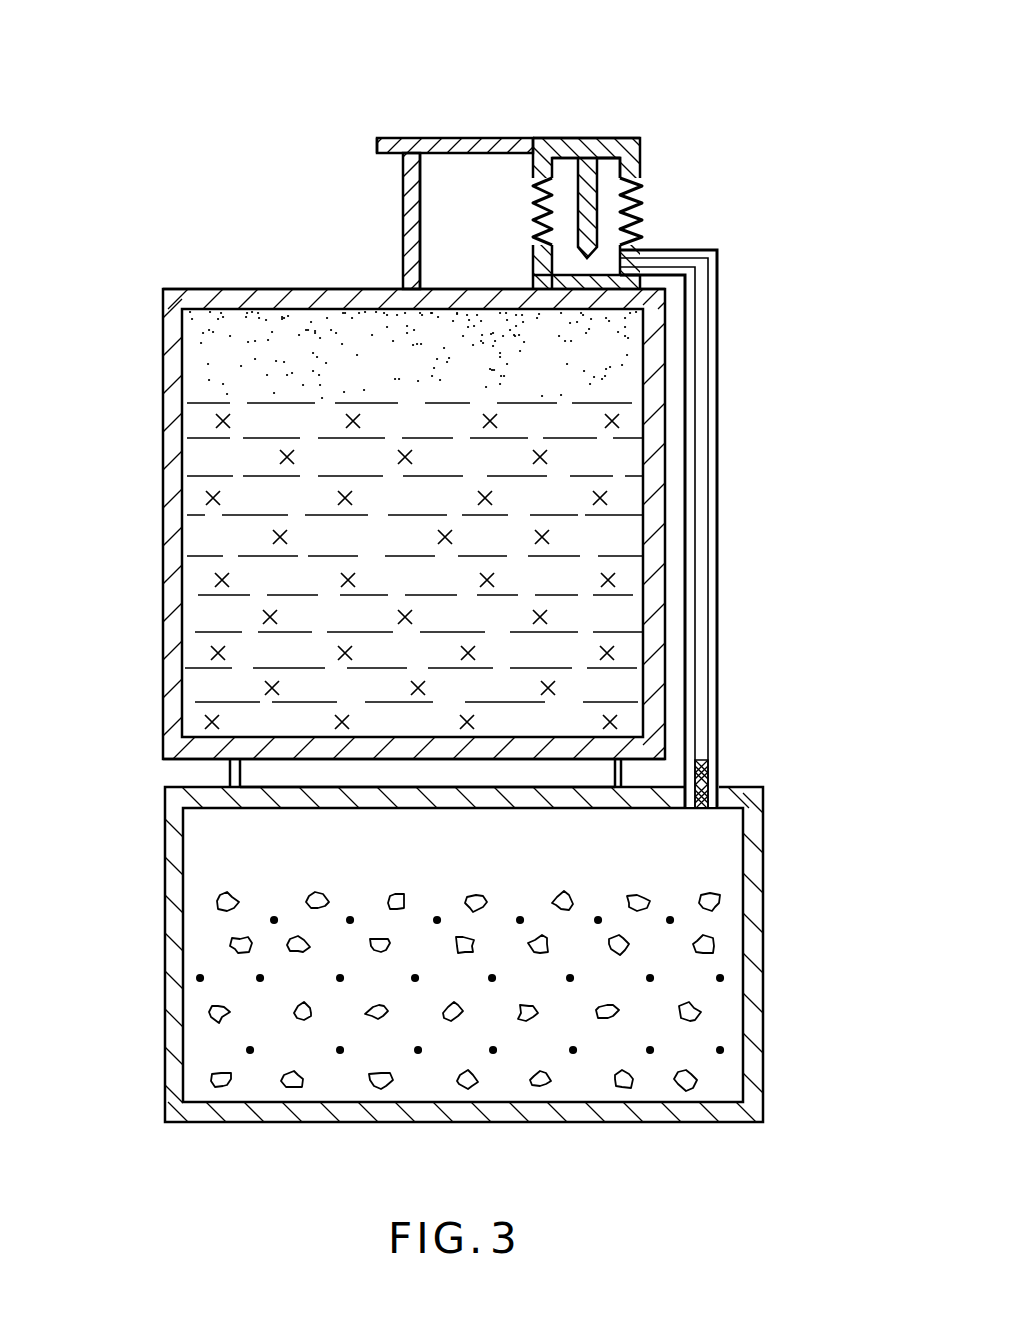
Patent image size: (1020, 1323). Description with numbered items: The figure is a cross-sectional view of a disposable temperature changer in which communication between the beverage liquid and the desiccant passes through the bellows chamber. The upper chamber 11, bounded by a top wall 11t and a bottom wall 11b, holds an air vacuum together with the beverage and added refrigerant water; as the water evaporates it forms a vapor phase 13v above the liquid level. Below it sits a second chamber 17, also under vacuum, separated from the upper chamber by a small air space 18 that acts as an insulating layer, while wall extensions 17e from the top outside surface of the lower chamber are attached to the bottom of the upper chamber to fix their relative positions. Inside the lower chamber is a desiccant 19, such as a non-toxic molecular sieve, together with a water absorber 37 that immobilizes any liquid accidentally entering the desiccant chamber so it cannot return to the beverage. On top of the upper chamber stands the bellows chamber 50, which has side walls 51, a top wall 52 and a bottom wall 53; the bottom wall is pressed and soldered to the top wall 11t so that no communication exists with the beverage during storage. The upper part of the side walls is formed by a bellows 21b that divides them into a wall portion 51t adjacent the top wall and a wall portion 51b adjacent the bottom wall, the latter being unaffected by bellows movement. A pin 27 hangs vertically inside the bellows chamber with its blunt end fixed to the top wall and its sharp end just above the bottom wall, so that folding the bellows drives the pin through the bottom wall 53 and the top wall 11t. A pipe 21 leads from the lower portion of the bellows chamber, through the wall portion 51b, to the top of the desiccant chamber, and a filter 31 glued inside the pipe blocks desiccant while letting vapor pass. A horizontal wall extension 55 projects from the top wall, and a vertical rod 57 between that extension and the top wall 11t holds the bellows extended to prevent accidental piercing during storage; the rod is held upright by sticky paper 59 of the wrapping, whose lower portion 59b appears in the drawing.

The chamber 11 is at (665, 355).
The top wall 11t is at (197, 288).
The bottom wall 11b is at (640, 772).
The vapor phase 13v is at (365, 368).
The chamber 17 is at (764, 975).
The wall extensions 17e is at (230, 772).
The air space 18 is at (410, 778).
The desiccant 19 is at (598, 918).
The pipe 21 is at (718, 540).
The bellows 21b is at (538, 199).
The pin 27 is at (642, 222).
The filter 31 is at (712, 766).
The water absorber 37 is at (272, 919).
The bellows chamber 50 is at (562, 178).
The side walls 51 is at (658, 152).
The wall portion 51t is at (508, 150).
The wall portion 51b is at (535, 273).
The top wall 52 is at (612, 138).
The bottom wall 53 is at (582, 290).
The horizontal wall extension 55 is at (466, 138).
The vertical rod 57 is at (400, 215).
The sticky paper 59 is at (392, 268).
The fill tube bottom 59b is at (378, 152).